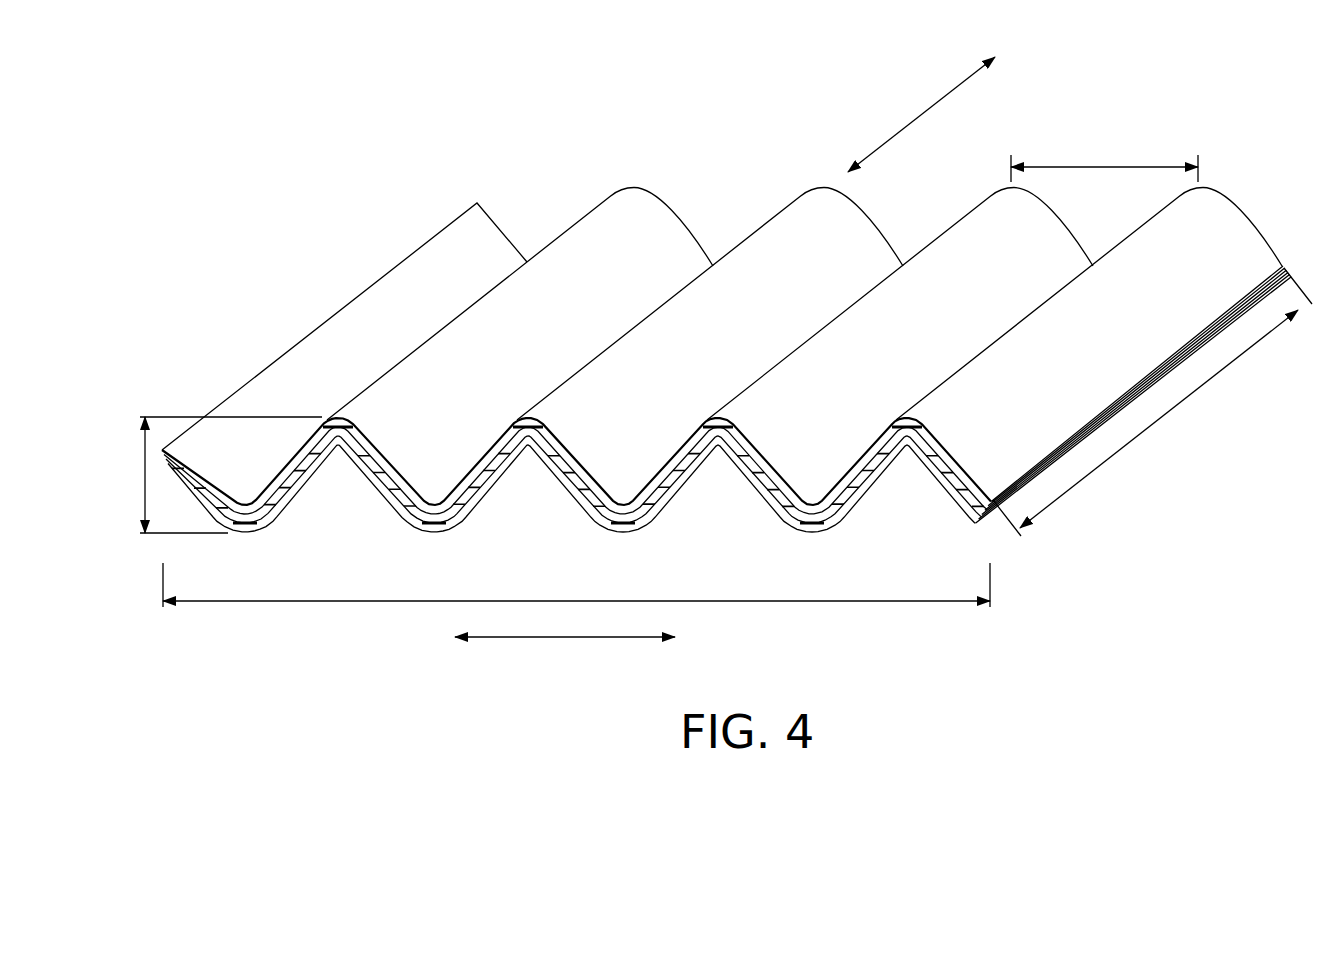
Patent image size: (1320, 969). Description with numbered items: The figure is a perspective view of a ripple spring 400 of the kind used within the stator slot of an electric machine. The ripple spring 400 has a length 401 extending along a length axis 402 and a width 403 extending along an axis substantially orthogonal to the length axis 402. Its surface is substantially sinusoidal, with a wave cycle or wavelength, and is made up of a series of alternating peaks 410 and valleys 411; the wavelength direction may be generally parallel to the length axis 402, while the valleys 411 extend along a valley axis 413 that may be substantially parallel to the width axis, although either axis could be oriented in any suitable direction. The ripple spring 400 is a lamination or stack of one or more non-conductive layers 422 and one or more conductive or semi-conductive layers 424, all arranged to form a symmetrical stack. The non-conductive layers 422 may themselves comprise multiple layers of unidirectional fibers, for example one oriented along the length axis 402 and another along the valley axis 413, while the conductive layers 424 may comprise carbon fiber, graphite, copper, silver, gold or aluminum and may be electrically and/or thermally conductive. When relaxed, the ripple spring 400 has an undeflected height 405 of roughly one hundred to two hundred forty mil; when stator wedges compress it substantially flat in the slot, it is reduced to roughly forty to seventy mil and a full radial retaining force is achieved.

The ripple spring 400 is at (1172, 114).
The length 401 is at (528, 601).
The length axis 402 is at (545, 637).
The width 403 is at (1127, 445).
The undeflected height 405 is at (152, 482).
The peaks 410 is at (549, 404).
The valleys 411 is at (433, 535).
The valley axis 413 is at (933, 102).
The non-conductive layers 422 is at (388, 447).
The conductive layers 424 is at (307, 490).